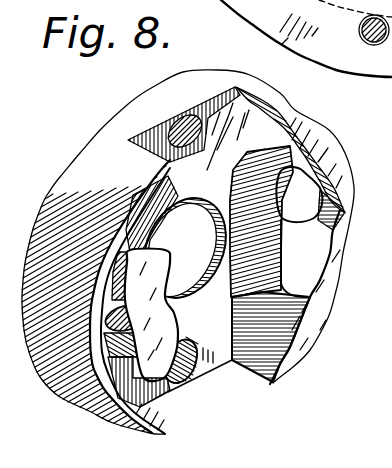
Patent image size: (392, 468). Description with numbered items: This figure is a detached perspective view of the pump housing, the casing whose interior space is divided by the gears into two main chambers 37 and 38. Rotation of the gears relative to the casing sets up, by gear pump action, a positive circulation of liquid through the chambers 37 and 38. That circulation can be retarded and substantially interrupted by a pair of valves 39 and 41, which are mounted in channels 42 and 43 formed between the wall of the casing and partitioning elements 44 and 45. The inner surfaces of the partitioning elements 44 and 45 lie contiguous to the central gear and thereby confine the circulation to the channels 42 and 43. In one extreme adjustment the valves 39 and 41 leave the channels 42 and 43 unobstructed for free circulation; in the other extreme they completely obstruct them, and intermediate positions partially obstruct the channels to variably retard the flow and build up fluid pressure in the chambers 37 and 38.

The main chamber 37 is at (212, 120).
The main chamber 38 is at (207, 368).
The valve 39 is at (333, 235).
The valve 41 is at (59, 372).
The channel 42 is at (322, 277).
The channel 43 is at (118, 248).
The partitioning element 44 is at (229, 183).
The partitioning element 45 is at (165, 327).